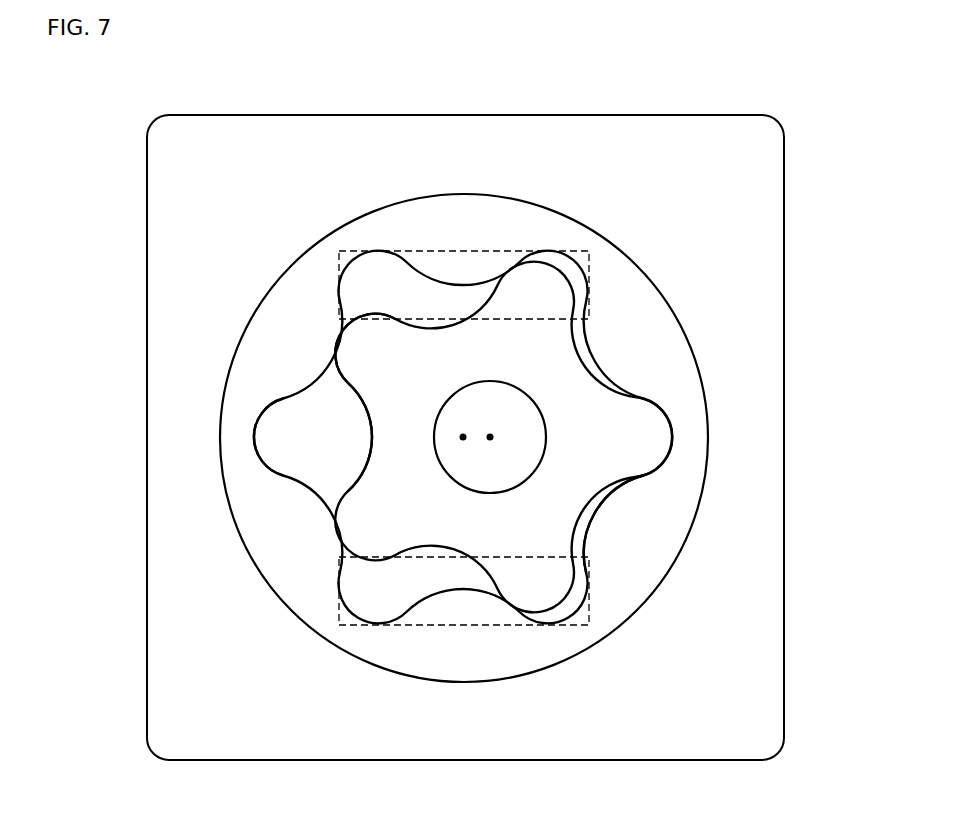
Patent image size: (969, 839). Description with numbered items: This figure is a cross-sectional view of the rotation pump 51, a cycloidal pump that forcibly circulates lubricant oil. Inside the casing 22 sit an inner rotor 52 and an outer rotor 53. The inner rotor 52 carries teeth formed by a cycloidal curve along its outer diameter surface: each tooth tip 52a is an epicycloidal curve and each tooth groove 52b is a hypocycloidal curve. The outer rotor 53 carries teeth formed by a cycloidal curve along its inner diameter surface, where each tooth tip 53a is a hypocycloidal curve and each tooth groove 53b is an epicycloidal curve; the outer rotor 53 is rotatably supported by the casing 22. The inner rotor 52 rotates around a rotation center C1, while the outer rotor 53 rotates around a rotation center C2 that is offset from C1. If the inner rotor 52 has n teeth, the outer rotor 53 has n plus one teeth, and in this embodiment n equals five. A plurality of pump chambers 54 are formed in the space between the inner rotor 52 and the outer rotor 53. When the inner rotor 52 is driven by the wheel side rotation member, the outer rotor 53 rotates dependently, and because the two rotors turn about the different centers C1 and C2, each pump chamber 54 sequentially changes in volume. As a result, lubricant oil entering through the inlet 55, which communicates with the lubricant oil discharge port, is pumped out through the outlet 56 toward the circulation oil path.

The casing 22 is at (753, 281).
The rotation pump 51 is at (602, 235).
The inner rotor 52 is at (363, 523).
The tooth tip 52a is at (373, 313).
The tooth groove 52b is at (367, 432).
The outer rotor 53 is at (673, 363).
The tooth tip 53a is at (590, 517).
The tooth groove 53b is at (278, 453).
The pump chamber 54 is at (378, 263).
The inlet 55 is at (463, 613).
The outlet 56 is at (463, 262).
The rotation center C1 is at (494, 450).
The rotation center C2 is at (459, 450).